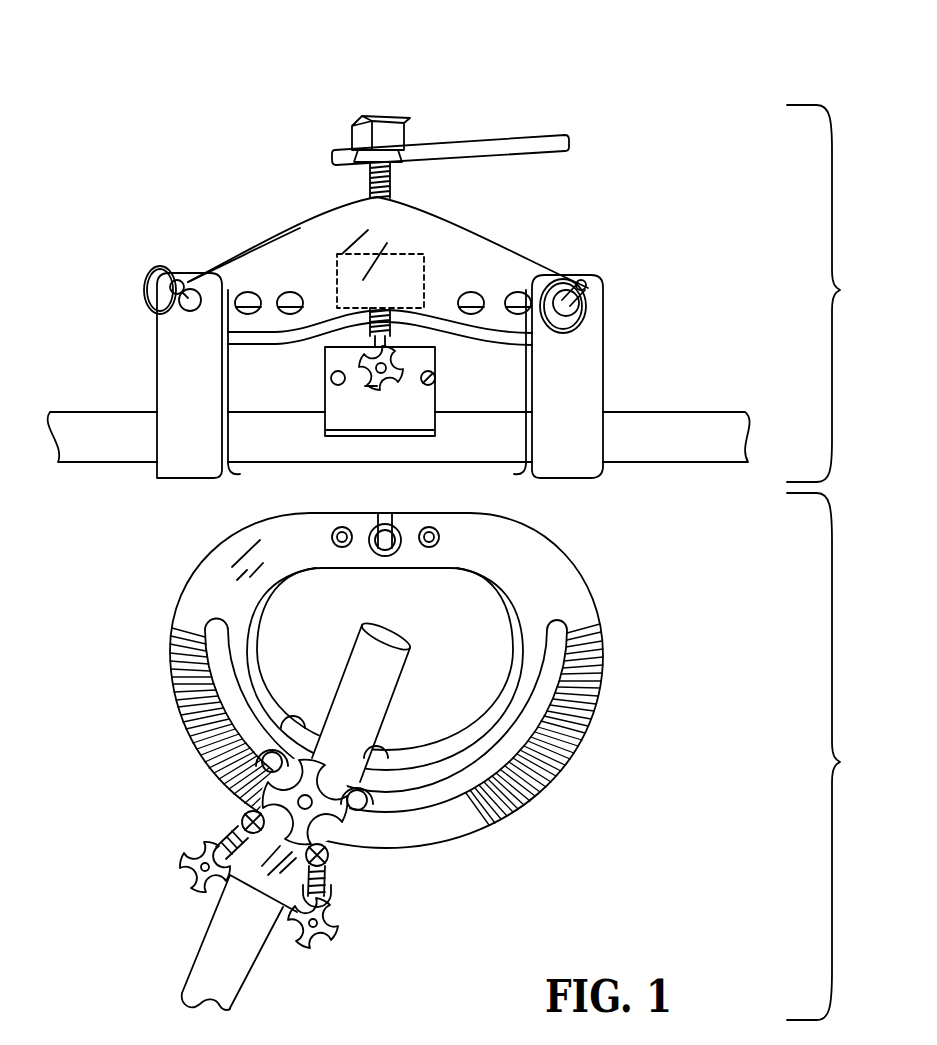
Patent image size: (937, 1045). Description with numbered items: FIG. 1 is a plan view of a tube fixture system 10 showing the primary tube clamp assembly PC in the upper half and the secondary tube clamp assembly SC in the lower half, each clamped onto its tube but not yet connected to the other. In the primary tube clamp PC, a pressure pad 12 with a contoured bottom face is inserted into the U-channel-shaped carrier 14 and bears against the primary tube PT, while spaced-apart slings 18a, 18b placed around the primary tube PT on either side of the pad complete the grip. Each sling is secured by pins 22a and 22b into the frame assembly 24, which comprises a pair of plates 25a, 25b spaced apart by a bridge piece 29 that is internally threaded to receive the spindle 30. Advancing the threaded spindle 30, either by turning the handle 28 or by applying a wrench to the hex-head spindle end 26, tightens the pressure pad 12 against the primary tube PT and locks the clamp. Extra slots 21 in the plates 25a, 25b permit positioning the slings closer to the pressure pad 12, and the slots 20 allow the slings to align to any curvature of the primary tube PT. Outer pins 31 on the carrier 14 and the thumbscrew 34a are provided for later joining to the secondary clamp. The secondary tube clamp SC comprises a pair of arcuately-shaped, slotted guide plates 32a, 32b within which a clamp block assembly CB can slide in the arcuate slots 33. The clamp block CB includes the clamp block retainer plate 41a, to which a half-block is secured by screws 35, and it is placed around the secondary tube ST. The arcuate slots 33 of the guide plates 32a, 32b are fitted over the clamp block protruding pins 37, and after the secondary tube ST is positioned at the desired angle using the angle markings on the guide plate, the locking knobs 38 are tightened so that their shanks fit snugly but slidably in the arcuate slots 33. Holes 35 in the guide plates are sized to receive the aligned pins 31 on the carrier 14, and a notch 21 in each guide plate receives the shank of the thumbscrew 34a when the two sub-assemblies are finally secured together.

The pipe clamp assembly 10 is at (66, 142).
The pressure pad 12 is at (418, 425).
The U-channel-shaped carrier 14 is at (422, 354).
The sling 18a is at (175, 381).
The sling 18b is at (578, 365).
The slots 20 is at (253, 292).
The extra slots / notch 21 is at (387, 525).
The pin 22a is at (192, 290).
The pin 22b is at (583, 290).
The frame assembly 24 is at (497, 226).
The plate 25a is at (248, 252).
The plate 25b is at (255, 338).
The hex-head spindle end 26 is at (395, 118).
The handle 28 is at (512, 140).
The bridge piece 29 is at (339, 253).
The spindle 30 is at (392, 180).
The pins 31 is at (440, 378).
The guide plate 32a is at (532, 550).
The guide plate 32b is at (474, 718).
The arcuate slots 33 is at (468, 789).
The thumbscrew 34a is at (370, 386).
The screws / holes 35 is at (345, 547).
The clamp block protruding pins 37 is at (262, 757).
The locking knobs 38 is at (322, 703).
The clamp block retainer plate 41a is at (215, 878).
The primary tube clamp assembly PC is at (834, 293).
The secondary tube clamp assembly SC is at (834, 756).
The primary tube PT is at (399, 437).
The secondary tube ST is at (232, 975).
The clamp block assembly CB is at (128, 861).